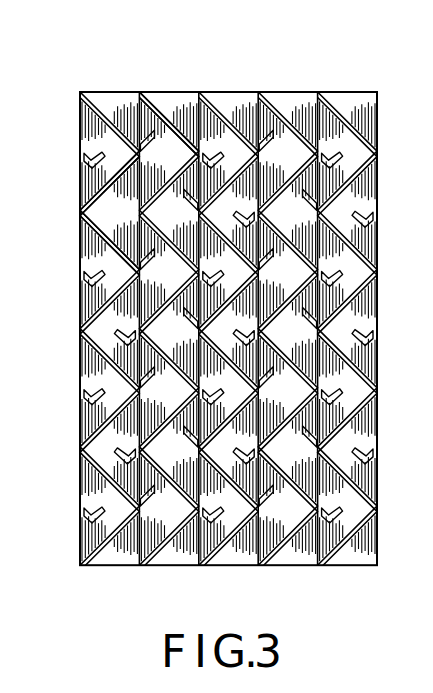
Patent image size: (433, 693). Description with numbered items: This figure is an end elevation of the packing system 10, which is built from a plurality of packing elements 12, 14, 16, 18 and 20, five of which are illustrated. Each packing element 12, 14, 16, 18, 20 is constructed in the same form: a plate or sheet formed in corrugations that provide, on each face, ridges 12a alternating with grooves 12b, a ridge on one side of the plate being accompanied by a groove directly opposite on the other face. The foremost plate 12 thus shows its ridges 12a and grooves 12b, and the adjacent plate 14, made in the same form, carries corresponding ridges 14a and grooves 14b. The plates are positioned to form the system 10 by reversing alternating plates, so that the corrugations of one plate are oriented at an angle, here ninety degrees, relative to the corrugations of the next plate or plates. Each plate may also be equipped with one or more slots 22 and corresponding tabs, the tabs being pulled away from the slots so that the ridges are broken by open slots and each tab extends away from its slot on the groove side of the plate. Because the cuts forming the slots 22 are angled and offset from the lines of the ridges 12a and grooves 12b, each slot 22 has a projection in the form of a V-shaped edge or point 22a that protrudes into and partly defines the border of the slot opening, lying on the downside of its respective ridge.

The packing system 10 is at (264, 76).
The packing element 12 is at (125, 552).
The ridge 12a is at (82, 210).
The groove 12b is at (137, 268).
The packing element 14 is at (182, 552).
The flat web portion of strip 14 14a is at (139, 120).
The inclined wall portion of strip 14 14b is at (171, 127).
The packing element 16 is at (240, 552).
The packing element 18 is at (297, 552).
The packing element 20 is at (355, 552).
The slot 22 is at (83, 512).
The V-shaped edge 22a is at (87, 406).